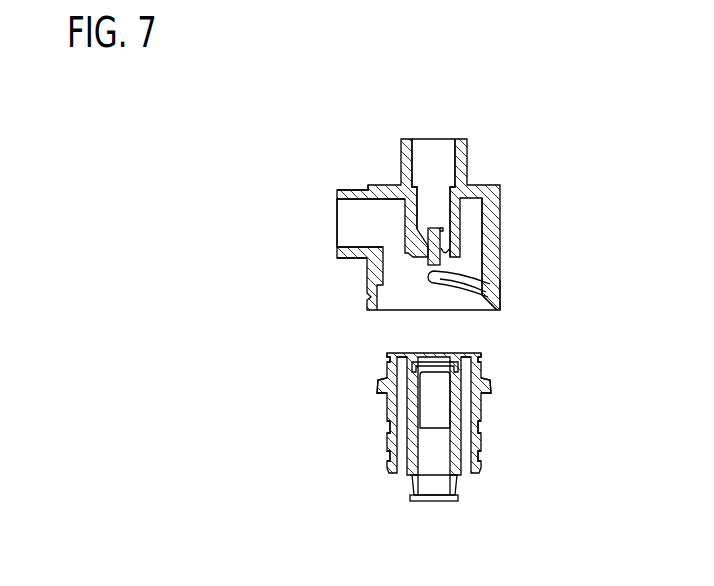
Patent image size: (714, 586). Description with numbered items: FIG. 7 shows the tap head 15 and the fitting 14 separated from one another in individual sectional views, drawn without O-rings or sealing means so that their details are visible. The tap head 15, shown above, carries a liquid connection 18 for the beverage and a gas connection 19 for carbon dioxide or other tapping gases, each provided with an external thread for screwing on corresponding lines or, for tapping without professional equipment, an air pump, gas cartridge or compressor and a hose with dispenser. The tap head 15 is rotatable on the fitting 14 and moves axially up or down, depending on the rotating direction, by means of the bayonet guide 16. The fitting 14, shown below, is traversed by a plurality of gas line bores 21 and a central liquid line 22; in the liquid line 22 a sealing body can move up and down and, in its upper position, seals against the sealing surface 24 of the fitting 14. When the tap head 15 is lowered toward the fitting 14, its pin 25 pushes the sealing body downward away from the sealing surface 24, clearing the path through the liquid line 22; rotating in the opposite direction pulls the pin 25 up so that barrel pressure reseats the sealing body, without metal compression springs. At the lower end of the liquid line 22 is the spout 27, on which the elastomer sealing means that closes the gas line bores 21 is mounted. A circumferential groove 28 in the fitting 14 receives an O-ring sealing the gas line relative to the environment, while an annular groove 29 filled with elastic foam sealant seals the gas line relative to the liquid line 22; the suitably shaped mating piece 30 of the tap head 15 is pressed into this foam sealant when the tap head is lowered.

The fitting 14 is at (386, 412).
The tap head 15 is at (503, 213).
The bayonet guide 16 is at (503, 293).
The liquid connection 18 is at (440, 160).
The gas connection 19 is at (355, 201).
The gas line bores 21 is at (388, 462).
The liquid line 22 is at (433, 412).
The sealing surface 24 is at (457, 364).
The pin 25 is at (427, 263).
The spout 27 is at (453, 482).
The circumferential groove 28 is at (478, 357).
The annular groove 29 is at (447, 356).
The mating piece 30 is at (450, 260).